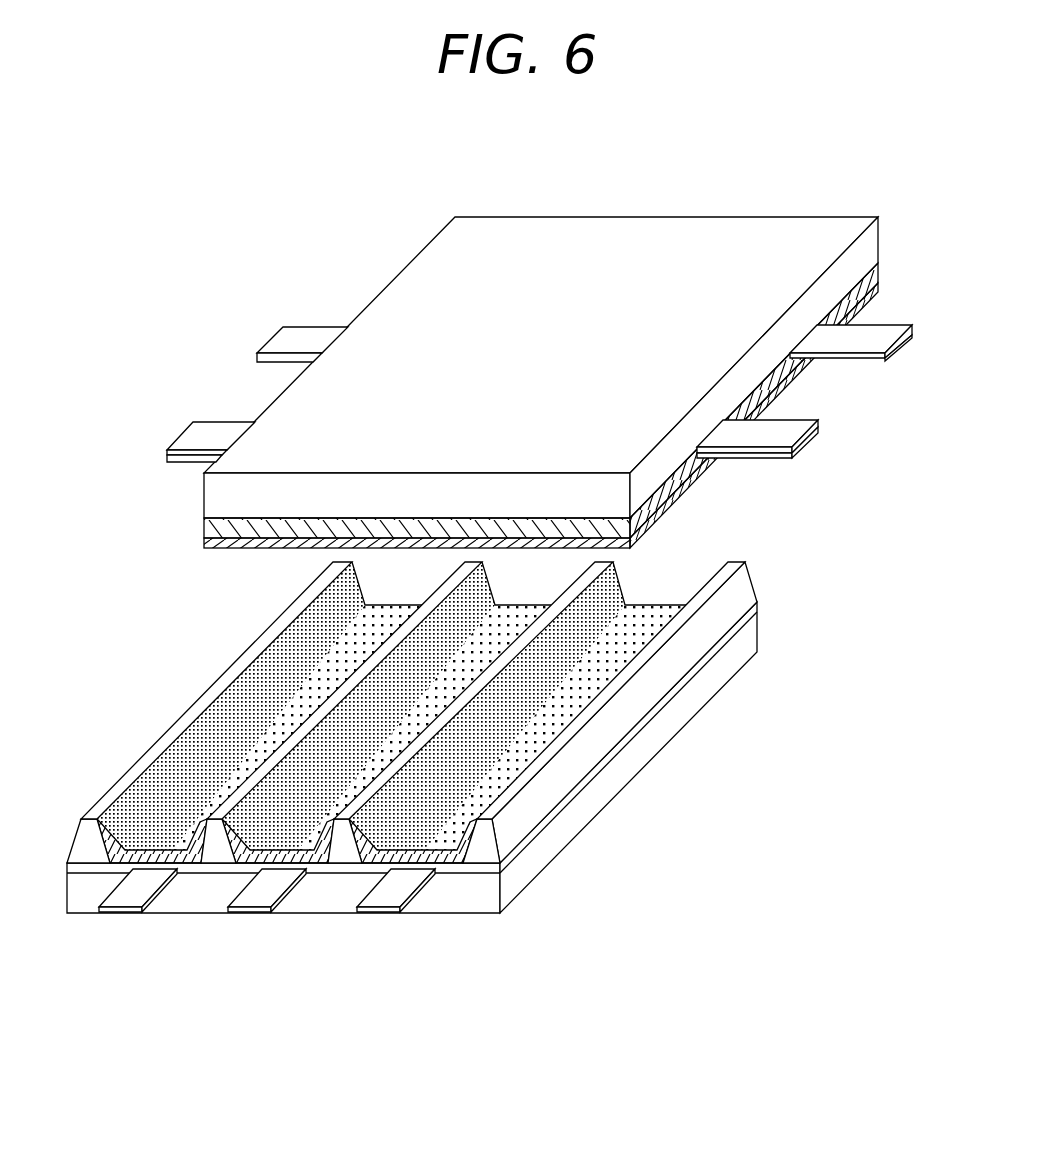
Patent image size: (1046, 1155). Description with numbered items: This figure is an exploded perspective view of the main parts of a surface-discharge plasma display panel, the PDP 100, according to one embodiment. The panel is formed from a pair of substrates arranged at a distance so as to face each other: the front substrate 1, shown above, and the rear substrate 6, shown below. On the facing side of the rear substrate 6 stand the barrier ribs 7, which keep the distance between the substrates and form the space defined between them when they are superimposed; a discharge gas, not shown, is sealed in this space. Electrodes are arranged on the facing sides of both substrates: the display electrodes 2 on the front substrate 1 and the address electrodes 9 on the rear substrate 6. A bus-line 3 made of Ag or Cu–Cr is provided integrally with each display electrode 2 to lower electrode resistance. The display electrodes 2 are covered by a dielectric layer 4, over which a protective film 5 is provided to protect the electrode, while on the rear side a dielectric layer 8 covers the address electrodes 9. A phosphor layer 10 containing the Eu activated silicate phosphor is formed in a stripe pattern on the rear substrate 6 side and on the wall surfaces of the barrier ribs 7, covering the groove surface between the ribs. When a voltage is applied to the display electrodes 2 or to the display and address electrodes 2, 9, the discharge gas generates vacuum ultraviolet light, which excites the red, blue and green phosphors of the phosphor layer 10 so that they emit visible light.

The plasma display panel 100 is at (766, 188).
The front substrate 1 is at (458, 240).
The display electrode 2 is at (853, 357).
The bus-line 3 is at (897, 347).
The dielectric layer 4 is at (205, 528).
The protective film 5 is at (232, 545).
The rear substrate 6 is at (683, 703).
The barrier rib 7 is at (85, 855).
The dielectric layer 8 is at (563, 805).
The address electrode 9 is at (145, 883).
The phosphor layer 10 is at (175, 858).